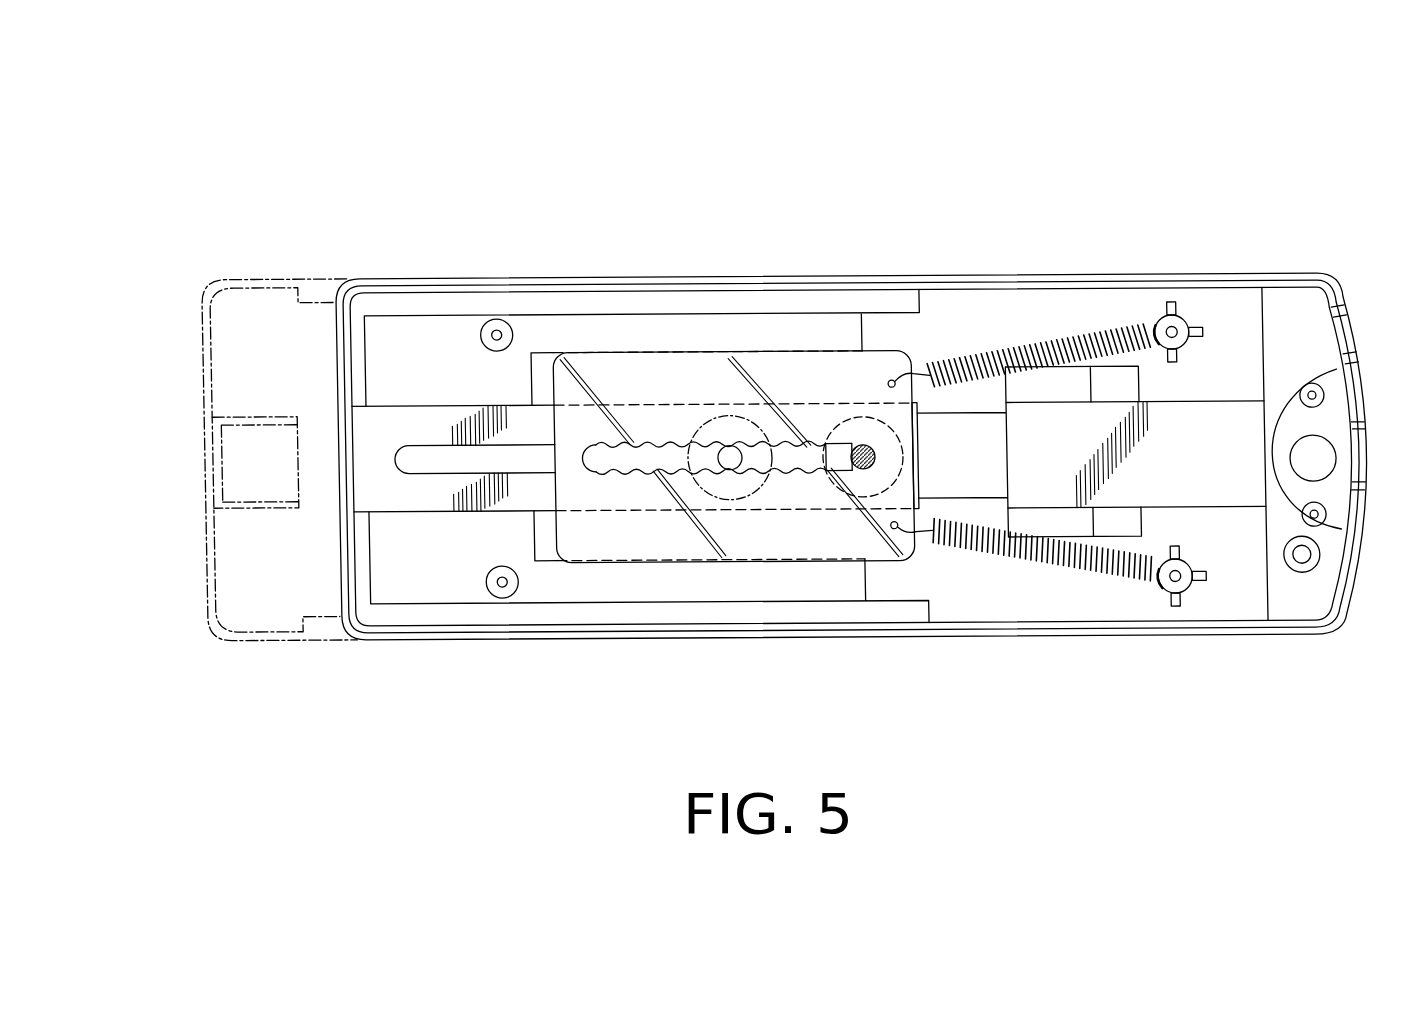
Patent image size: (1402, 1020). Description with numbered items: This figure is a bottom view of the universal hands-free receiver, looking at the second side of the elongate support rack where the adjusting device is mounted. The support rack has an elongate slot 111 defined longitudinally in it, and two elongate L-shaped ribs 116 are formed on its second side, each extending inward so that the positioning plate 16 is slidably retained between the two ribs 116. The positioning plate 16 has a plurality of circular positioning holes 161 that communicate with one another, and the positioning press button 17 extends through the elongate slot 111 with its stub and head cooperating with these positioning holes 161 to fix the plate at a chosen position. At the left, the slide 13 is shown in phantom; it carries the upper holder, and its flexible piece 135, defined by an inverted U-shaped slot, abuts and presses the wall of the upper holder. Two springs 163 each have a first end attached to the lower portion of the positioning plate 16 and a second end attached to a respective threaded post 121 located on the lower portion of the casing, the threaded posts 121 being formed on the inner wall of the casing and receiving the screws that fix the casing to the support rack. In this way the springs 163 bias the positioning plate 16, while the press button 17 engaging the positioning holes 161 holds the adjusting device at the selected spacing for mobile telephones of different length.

The slide 13 is at (271, 260).
The flexible piece 135 is at (235, 472).
The elongate slot 111 is at (430, 465).
The circular positioning holes 161 is at (593, 462).
The elongate L-shaped ribs 116 is at (628, 587).
The positioning plate 16 is at (898, 353).
The positioning press button 17 is at (709, 405).
The springs 163 is at (1087, 320).
The threaded posts 121 is at (1193, 595).